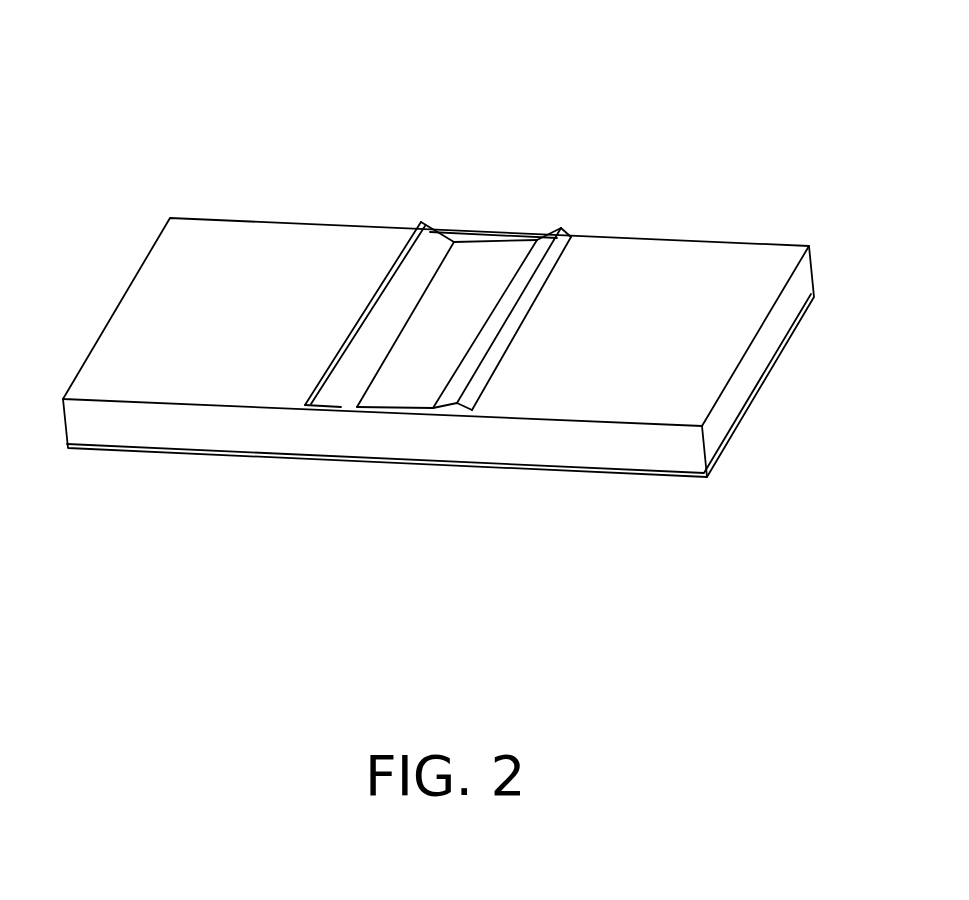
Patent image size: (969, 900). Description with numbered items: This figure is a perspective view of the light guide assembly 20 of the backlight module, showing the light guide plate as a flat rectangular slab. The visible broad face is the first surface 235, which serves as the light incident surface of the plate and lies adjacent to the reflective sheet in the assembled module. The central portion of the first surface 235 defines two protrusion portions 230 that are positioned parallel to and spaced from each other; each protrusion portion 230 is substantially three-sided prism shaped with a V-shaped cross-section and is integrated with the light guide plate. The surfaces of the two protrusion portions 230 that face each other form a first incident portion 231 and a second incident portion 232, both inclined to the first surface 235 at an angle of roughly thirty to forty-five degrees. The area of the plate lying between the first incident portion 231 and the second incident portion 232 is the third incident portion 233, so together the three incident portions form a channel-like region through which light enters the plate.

The light guide assembly 20 is at (636, 83).
The protrusion portion 230 is at (375, 293).
The first incident portion 231 is at (537, 257).
The second incident portion 232 is at (432, 243).
The third incident portion 233 is at (478, 263).
The first surface 235 is at (698, 270).